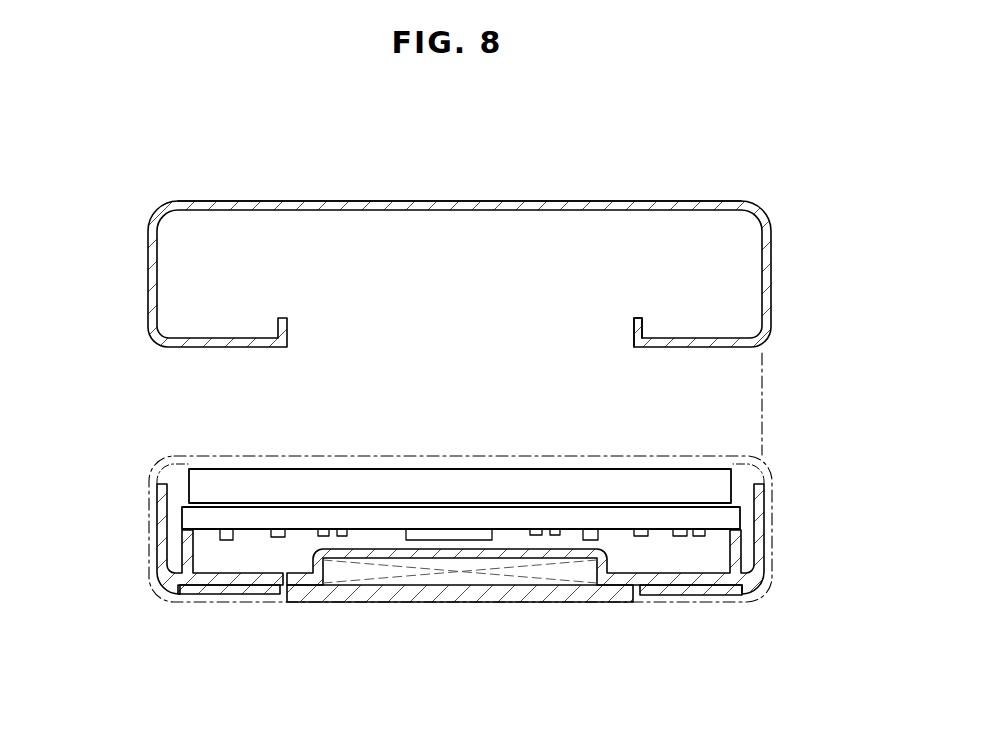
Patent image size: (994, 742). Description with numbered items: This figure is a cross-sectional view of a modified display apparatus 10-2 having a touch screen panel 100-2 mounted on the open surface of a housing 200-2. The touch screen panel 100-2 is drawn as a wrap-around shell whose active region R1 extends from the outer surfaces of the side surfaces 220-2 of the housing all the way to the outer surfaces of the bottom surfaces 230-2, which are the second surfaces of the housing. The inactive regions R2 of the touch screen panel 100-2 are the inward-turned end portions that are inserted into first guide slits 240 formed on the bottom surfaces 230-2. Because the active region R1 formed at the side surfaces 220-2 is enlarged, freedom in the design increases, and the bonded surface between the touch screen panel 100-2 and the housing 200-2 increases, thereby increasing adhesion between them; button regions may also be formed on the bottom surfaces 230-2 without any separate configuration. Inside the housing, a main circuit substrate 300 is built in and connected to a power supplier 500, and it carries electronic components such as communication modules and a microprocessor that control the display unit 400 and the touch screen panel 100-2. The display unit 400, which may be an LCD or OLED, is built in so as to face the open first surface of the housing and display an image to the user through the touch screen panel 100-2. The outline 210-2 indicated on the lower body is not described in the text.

The display apparatus 10-2 is at (188, 163).
The touch screen panel 100-2 is at (718, 195).
The active region R1 is at (458, 198).
The inactive regions R2 is at (634, 327).
The housing 200-2 is at (768, 598).
The cover / outline of second housing 210-2 is at (553, 466).
The side surfaces 220-2 is at (157, 513).
The bottom surfaces 230-2 is at (684, 584).
The first guide slits 240 is at (633, 588).
The main circuit substrate 300 is at (722, 519).
The display unit 400 is at (713, 482).
The power supplier 500 is at (461, 578).